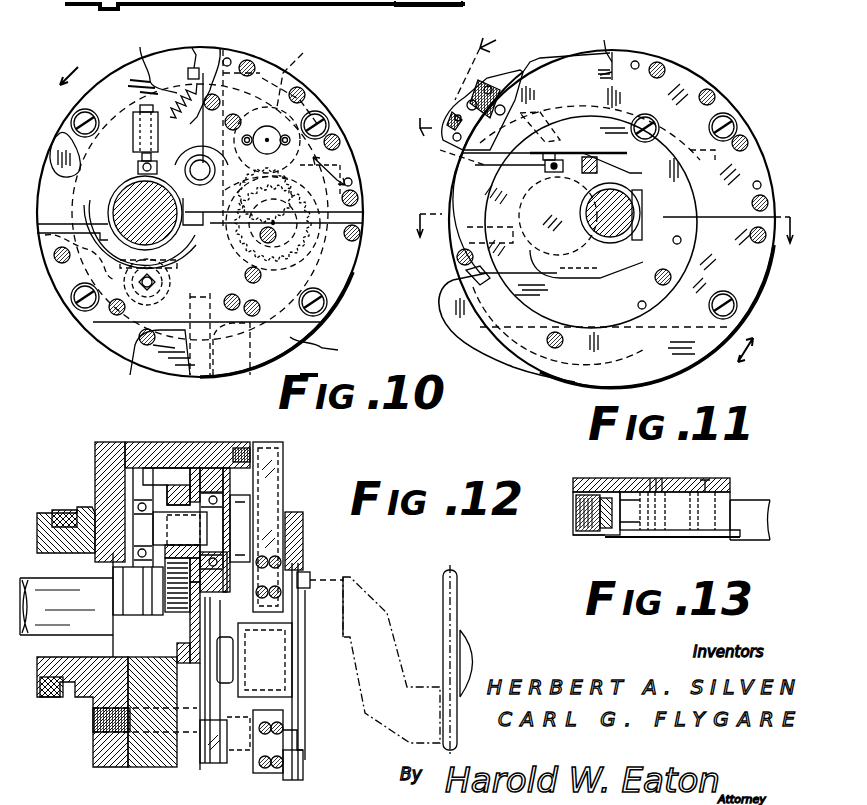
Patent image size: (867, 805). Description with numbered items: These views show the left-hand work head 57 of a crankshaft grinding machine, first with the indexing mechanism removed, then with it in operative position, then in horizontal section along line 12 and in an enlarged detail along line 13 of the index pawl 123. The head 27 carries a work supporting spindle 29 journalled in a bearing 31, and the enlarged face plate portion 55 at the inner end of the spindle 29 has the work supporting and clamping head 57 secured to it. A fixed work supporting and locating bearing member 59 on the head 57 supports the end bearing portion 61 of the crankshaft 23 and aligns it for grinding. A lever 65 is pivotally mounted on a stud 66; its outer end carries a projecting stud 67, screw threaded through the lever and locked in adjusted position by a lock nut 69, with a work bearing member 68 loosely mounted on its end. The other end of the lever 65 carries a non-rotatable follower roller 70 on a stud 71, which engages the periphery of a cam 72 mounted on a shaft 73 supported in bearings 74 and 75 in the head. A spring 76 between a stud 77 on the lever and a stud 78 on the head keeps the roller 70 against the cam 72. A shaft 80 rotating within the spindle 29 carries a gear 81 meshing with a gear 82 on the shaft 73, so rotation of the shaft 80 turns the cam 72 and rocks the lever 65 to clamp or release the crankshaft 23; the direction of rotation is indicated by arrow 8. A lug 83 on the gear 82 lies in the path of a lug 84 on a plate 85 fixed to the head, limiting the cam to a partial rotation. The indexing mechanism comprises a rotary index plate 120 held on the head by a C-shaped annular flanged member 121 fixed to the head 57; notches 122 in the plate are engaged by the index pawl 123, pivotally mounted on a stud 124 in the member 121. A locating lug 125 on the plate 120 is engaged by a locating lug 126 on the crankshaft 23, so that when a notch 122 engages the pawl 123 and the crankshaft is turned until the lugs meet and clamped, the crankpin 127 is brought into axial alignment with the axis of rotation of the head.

In FIG. 10, the arrow indicating direction 8 is at (322, 178).
In FIG. 11, the section line 12- 12 is at (597, 237).
In FIG. 11, the section line 13- 13 is at (451, 81).
In FIG. 10, the crankshaft 23 is at (90, 200).
In FIG. 11, the crankshaft 23 is at (470, 182).
In FIG. 12, the crankshaft 23 is at (458, 590).
In FIG. 10, the head 27 is at (393, 6).
In FIG. 12, the work supporting spindle 29 is at (50, 518).
In FIG. 12, the bearing 31 is at (48, 510).
In FIG. 10, the face plate portion 55 is at (56, 150).
In FIG. 12, the face plate portion 55 is at (100, 752).
In FIG. 10, the work supporting and clamping head 57 is at (125, 70).
In FIG. 11, the work supporting and clamping head 57 is at (585, 373).
In FIG. 12, the work supporting and clamping head 57 is at (150, 758).
In FIG. 10, the work supporting and locating bearing member 59 is at (68, 283).
In FIG. 11, the work supporting and locating bearing member 59 is at (565, 272).
In FIG. 12, the work supporting and locating bearing member 59 is at (290, 670).
In FIG. 10, the end bearing portion 61 is at (126, 190).
In FIG. 11, the end bearing portion 61 is at (545, 200).
In FIG. 12, the end bearing portion 61 is at (284, 712).
In FIG. 10, the lever 65 is at (217, 130).
In FIG. 11, the lever 65 is at (560, 165).
In FIG. 10, the stud 66 is at (203, 165).
In FIG. 11, the stud 66 is at (605, 152).
In FIG. 10, the projecting stud 67 is at (140, 155).
In FIG. 11, the projecting stud 67 is at (560, 155).
In FIG. 10, the work bearing member 68 is at (137, 165).
In FIG. 11, the work bearing member 68 is at (550, 178).
In FIG. 10, the lock nut 69 is at (135, 108).
In FIG. 10, the follower roller 70 is at (301, 76).
In FIG. 10, the stud 71 is at (262, 110).
In FIG. 10, the cam 72 is at (273, 223).
In FIG. 12, the cam 72 is at (240, 520).
In FIG. 10, the shaft 73 is at (340, 235).
In FIG. 12, the shaft 73 is at (250, 530).
In FIG. 12, the bearing 74 is at (135, 495).
In FIG. 12, the bearing 75 is at (220, 470).
In FIG. 10, the spring 76 is at (160, 76).
In FIG. 10, the stud 77 is at (195, 110).
In FIG. 10, the stud 78 is at (191, 49).
In FIG. 11, the stud 78 is at (603, 48).
In FIG. 10, the shaft 80 is at (155, 299).
In FIG. 12, the shaft 80 is at (38, 630).
In FIG. 10, the gear 81 is at (190, 334).
In FIG. 12, the gear 81 is at (183, 655).
In FIG. 10, the gear 82 is at (281, 308).
In FIG. 12, the gear 82 is at (188, 465).
In FIG. 10, the projecting lug 83 is at (290, 192).
In FIG. 10, the lug 84 is at (340, 280).
In FIG. 12, the lug 84 is at (150, 465).
In FIG. 12, the plate 85 is at (130, 470).
In FIG. 11, the rotary index plate 120 is at (550, 135).
In FIG. 12, the rotary index plate 120 is at (306, 572).
In FIG. 13, the rotary index plate 120 is at (752, 537).
In FIG. 11, the C-shaped annular flanged member 121 is at (470, 322).
In FIG. 12, the C-shaped annular flanged member 121 is at (300, 520).
In FIG. 13, the C-shaped annular flanged member 121 is at (740, 500).
In FIG. 11, the notches 122 is at (550, 140).
In FIG. 12, the notches 122 is at (298, 738).
In FIG. 13, the notches 122 is at (712, 530).
In FIG. 11, the index pawl 123 is at (455, 156).
In FIG. 13, the index pawl 123 is at (615, 492).
In FIG. 11, the stud 124 is at (468, 105).
In FIG. 13, the stud 124 is at (655, 480).
In FIG. 11, the locating lug 125 is at (695, 268).
In FIG. 12, the locating lug 125 is at (343, 578).
In FIG. 11, the locating lug 126 is at (700, 230).
In FIG. 11, the crankpin 127 is at (697, 196).
In FIG. 12, the crankpin 127 is at (306, 650).